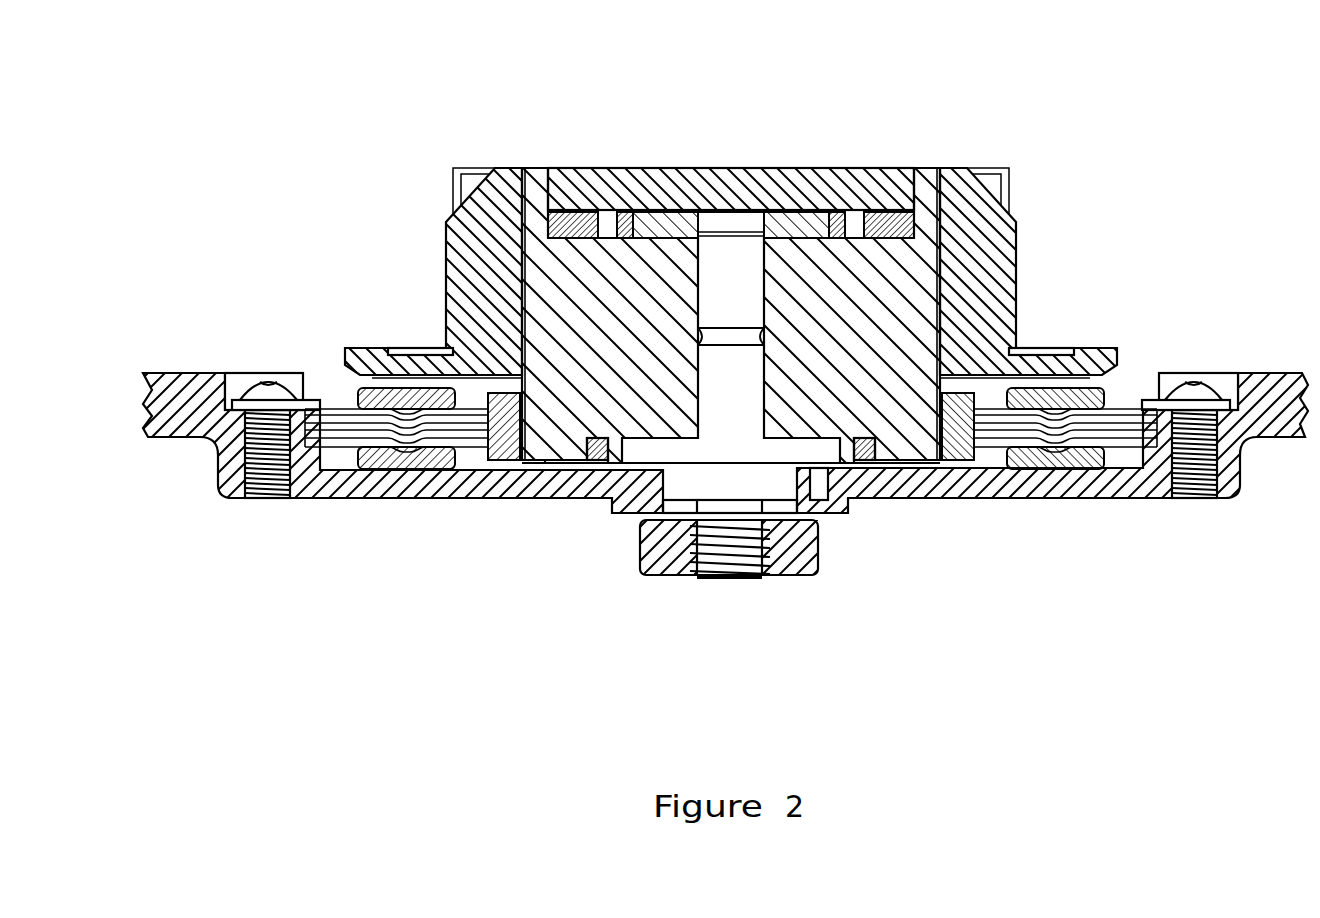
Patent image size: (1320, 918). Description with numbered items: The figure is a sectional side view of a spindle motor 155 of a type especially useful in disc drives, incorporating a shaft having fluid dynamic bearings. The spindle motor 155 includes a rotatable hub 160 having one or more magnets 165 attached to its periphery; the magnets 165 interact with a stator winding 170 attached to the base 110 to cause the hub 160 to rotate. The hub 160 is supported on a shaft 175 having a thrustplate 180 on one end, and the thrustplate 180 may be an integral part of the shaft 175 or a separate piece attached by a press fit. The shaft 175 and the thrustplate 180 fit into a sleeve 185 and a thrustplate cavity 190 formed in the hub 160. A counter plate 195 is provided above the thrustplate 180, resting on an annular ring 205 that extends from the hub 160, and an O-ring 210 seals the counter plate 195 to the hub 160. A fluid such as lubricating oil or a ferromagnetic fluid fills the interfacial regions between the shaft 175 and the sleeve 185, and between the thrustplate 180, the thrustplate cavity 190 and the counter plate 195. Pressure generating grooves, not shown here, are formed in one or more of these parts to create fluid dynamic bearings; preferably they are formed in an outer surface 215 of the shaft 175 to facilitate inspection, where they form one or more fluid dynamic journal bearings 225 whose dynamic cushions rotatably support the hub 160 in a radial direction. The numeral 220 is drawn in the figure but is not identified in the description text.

The spindle motor 155 is at (398, 180).
The base 110 is at (995, 485).
The rotatable hub 160 is at (440, 326).
The magnets 165 is at (962, 460).
The stator winding 170 is at (1097, 473).
The shaft 175 is at (752, 395).
The thrustplate 180 is at (795, 213).
The sleeve 185 is at (942, 315).
The thrustplate cavity 190 is at (845, 220).
The counter plate 195 is at (612, 178).
The annular ring 205 is at (947, 270).
The O-ring 210 is at (917, 223).
The outer surface of the shaft 215 is at (698, 307).
The electrode 220 is at (665, 206).
The fluid dynamic journal bearings 225 is at (772, 292).